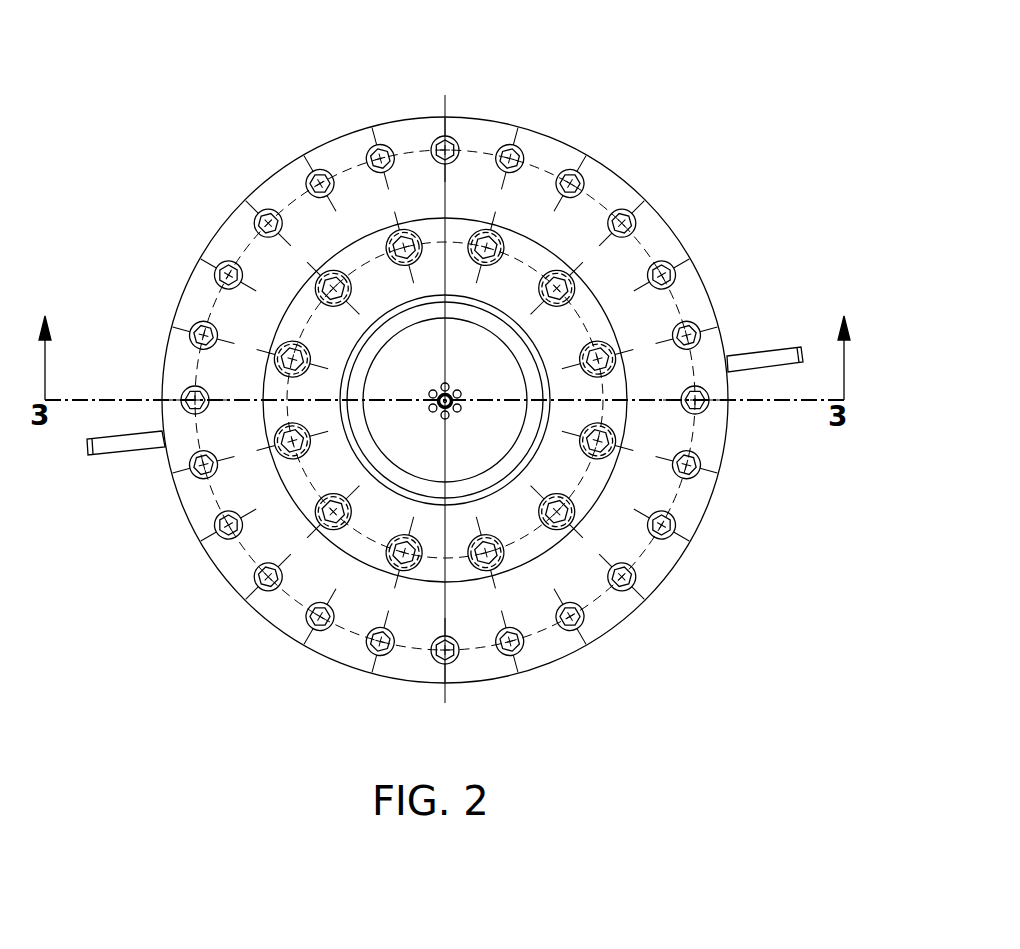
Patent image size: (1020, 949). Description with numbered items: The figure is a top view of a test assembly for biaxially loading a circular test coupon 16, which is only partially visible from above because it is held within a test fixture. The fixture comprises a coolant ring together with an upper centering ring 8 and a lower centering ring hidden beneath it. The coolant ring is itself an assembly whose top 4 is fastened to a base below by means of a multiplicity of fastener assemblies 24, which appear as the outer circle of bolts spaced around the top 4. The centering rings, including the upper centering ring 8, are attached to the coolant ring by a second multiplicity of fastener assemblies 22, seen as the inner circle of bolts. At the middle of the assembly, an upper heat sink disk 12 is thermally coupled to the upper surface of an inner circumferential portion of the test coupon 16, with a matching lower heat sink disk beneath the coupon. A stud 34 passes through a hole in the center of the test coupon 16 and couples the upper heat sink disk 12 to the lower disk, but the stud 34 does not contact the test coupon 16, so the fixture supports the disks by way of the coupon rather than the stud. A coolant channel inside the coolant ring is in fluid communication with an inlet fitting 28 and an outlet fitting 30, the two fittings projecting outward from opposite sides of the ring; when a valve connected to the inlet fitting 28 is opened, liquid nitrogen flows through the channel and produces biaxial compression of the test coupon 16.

The top 4 is at (612, 187).
The upper centering ring 8 is at (362, 250).
The upper heat sink disk 12 is at (397, 378).
The test coupon 16 is at (400, 480).
The fastener assemblies 22 is at (493, 235).
The fastener assemblies 24 is at (442, 142).
The inlet fitting 28 is at (123, 450).
The outlet fitting 30 is at (758, 350).
The stud 34 is at (448, 405).